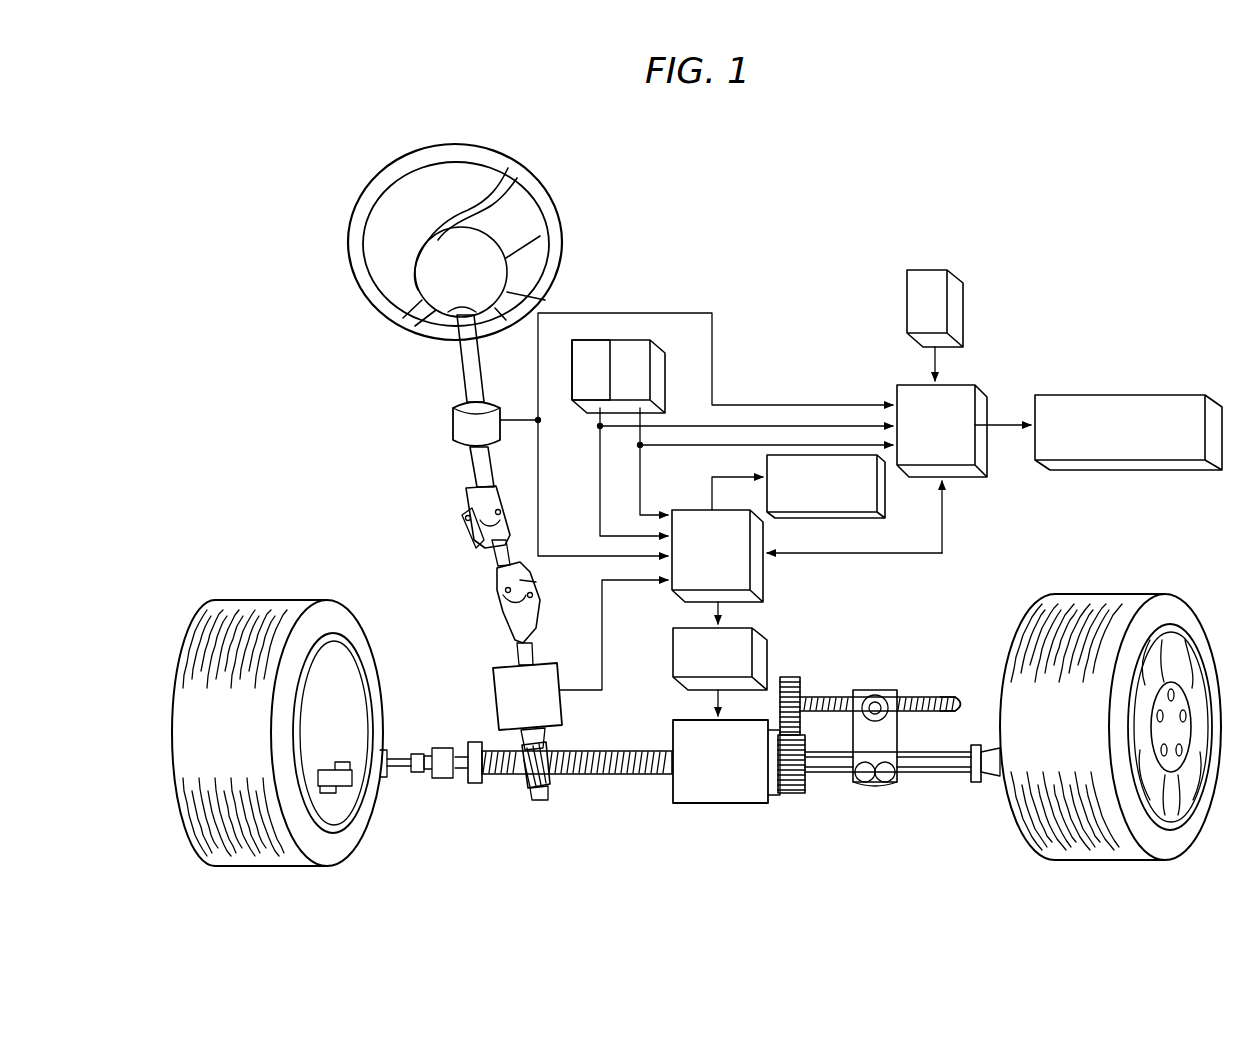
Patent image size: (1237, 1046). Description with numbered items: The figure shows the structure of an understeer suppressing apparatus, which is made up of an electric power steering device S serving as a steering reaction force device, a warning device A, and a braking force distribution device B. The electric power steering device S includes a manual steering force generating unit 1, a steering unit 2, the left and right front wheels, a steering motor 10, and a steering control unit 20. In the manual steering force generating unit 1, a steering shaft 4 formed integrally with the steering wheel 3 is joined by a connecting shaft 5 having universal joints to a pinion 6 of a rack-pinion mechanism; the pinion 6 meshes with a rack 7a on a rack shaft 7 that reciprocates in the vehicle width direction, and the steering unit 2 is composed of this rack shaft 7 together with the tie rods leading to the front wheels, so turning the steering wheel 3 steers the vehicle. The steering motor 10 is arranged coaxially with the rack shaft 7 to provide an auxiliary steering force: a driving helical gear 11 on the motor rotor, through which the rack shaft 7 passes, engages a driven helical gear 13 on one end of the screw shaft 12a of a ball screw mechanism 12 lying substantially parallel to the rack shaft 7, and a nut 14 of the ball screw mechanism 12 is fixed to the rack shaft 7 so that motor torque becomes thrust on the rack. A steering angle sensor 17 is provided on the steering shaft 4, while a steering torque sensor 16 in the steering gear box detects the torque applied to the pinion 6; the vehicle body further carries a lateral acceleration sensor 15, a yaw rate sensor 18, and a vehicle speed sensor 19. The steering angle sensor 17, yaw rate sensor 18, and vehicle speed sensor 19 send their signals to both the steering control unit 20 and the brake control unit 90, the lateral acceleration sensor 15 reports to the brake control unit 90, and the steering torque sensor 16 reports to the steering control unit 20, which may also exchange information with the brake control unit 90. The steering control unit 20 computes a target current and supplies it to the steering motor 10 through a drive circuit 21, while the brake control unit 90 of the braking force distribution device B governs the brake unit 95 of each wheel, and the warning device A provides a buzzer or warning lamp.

The manual steering force generating unit 1 is at (455, 518).
The steering unit 2 is at (711, 797).
The steering wheel 3 is at (357, 302).
The steering shaft 4 is at (475, 470).
The connecting shaft 5 is at (490, 575).
The pinion 6 is at (525, 787).
The rack shaft 7 is at (842, 790).
The rack 7a is at (603, 780).
The steering motor 10 is at (716, 805).
The driving helical gear 11 is at (783, 795).
The ball screw mechanism 12 is at (898, 665).
The screw shaft 12a is at (950, 697).
The driven helical gear 13 is at (800, 680).
The nut 14 is at (865, 690).
The lateral acceleration sensor 15 is at (935, 270).
The steering torque sensor 16 is at (562, 708).
The steering angle sensor 17 is at (453, 420).
The yaw rate sensor 18 is at (623, 366).
The vehicle speed sensor 19 is at (572, 382).
The steering control unit 20 is at (765, 578).
The drive circuit 21 is at (755, 662).
The brake control unit 90 is at (965, 385).
The brake unit 95 is at (1105, 395).
The warning device A is at (885, 493).
The braking force distribution device B is at (1080, 283).
The electric power steering device S is at (428, 553).